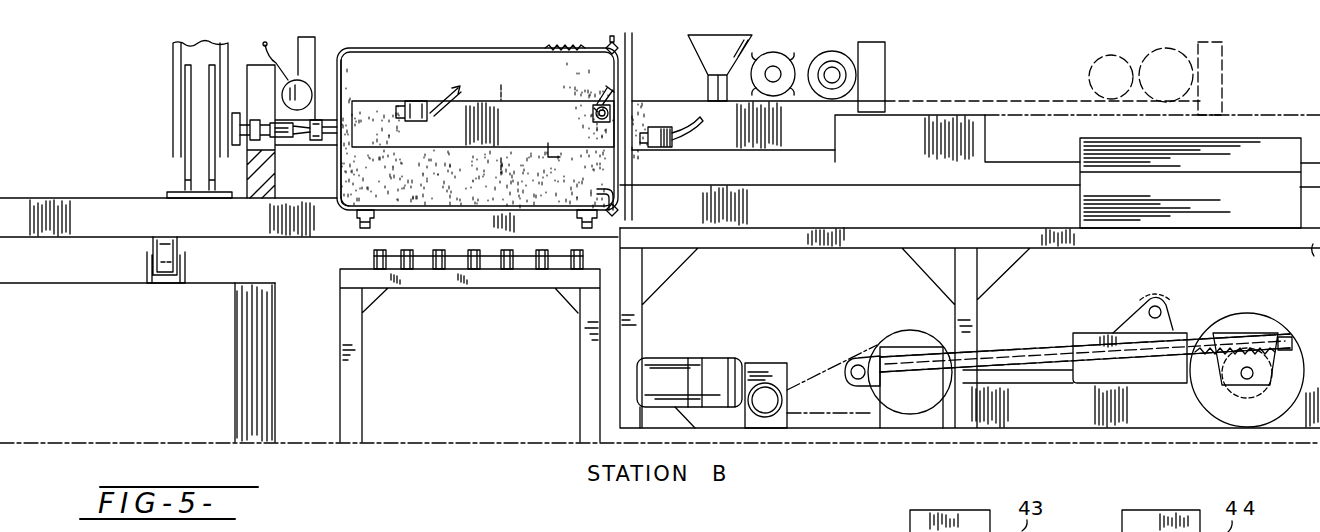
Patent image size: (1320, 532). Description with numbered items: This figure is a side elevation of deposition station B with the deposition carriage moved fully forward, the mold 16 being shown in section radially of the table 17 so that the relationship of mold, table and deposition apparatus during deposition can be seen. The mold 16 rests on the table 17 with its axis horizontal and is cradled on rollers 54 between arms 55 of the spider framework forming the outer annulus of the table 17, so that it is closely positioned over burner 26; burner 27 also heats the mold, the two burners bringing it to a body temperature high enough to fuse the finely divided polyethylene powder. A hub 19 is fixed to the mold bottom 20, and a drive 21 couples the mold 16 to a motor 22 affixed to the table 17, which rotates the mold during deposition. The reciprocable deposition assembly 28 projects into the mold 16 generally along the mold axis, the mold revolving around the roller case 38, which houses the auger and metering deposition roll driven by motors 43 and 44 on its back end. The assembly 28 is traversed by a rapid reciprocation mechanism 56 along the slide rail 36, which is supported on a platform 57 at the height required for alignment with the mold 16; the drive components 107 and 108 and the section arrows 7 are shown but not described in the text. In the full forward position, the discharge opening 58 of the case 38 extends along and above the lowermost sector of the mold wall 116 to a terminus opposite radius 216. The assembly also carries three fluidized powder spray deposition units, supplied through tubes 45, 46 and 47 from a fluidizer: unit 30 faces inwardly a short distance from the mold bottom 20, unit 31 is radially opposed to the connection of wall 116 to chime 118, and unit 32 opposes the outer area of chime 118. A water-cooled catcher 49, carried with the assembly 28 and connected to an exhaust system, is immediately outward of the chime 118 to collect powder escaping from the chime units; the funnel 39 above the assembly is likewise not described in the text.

The section line arrows 7 is at (541, 92).
The mold 16 is at (477, 133).
The table 17 is at (31, 193).
The hub 19 is at (330, 140).
The mold bottom 20 is at (347, 88).
The drive 21 is at (290, 140).
The motor 22 is at (233, 115).
The burner 26 is at (523, 265).
The burner 27 is at (300, 90).
The deposition assembly 28 is at (739, 160).
The spray deposition unit 30 is at (408, 121).
The spray deposition unit 31 is at (594, 112).
The spray deposition unit 32 is at (661, 148).
The slide rail 36 is at (1010, 216).
The case 38 is at (566, 160).
The funnel 39 is at (710, 53).
The motor 43 is at (778, 64).
The motor 44 is at (833, 68).
The tube 45 is at (446, 103).
The tube 46 is at (606, 90).
The tube 47 is at (686, 140).
The catcher 49 is at (633, 57).
The roller 54 is at (372, 216).
The arm 55 is at (233, 221).
The reciprocation mechanism 56 is at (1008, 353).
The platform 57 is at (897, 240).
The discharge opening 58 is at (475, 179).
The motor 107 is at (673, 367).
The gear box 108 is at (762, 373).
The mold wall 116 is at (486, 213).
The chime 118 is at (597, 191).
The radius 216 is at (344, 207).